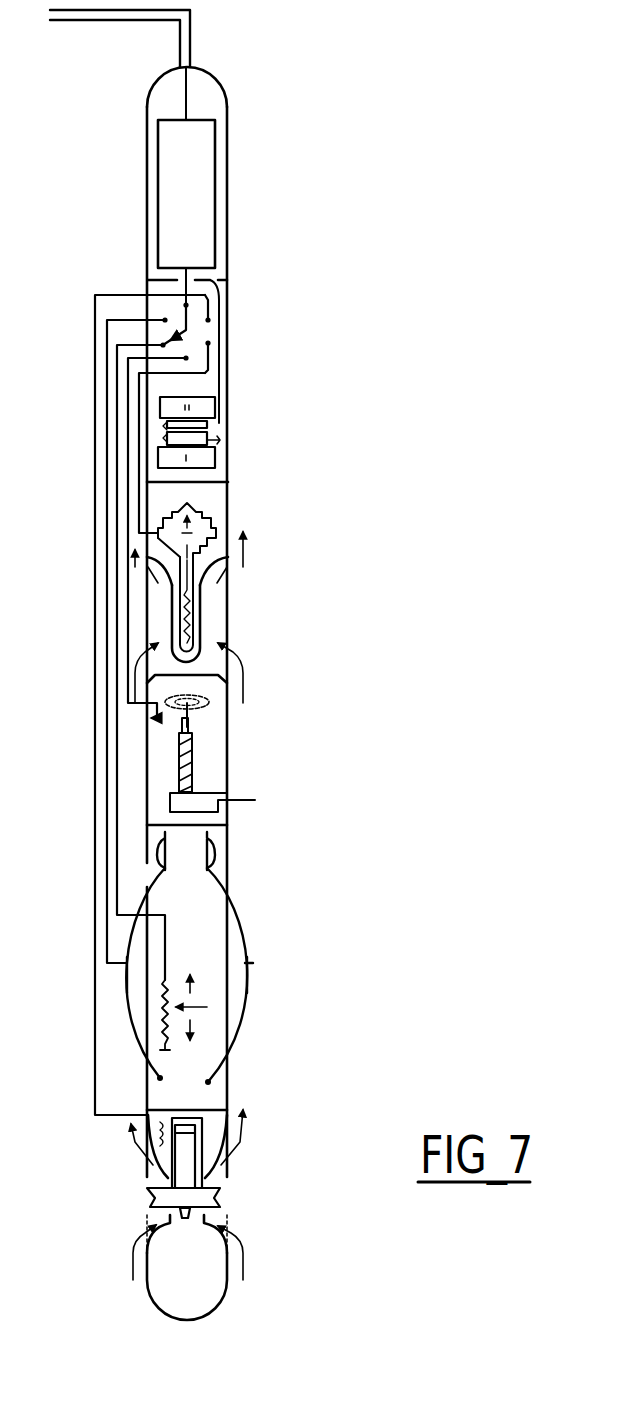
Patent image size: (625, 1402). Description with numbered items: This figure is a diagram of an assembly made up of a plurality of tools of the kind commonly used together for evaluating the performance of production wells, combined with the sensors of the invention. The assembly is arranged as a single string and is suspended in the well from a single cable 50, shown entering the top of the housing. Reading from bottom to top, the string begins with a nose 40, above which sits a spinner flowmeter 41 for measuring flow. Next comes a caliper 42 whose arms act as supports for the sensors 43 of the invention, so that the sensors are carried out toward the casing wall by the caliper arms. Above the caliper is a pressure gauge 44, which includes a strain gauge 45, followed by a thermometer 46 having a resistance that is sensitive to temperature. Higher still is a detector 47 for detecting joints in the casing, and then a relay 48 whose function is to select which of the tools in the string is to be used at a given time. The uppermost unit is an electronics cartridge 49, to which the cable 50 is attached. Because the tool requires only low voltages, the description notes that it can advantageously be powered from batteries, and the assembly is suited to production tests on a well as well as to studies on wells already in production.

The nose 40 is at (200, 1282).
The spinner flowmeter 41 is at (148, 1200).
The caliper 42 is at (155, 1032).
The sensors 43 is at (122, 980).
The pressure gauge 44 is at (215, 757).
The strain gauge 45 is at (208, 700).
The thermometer 46 is at (212, 607).
The detector 47 is at (223, 408).
The relay 48 is at (208, 330).
The electronics cartridge 49 is at (200, 226).
The cable 50 is at (115, 12).